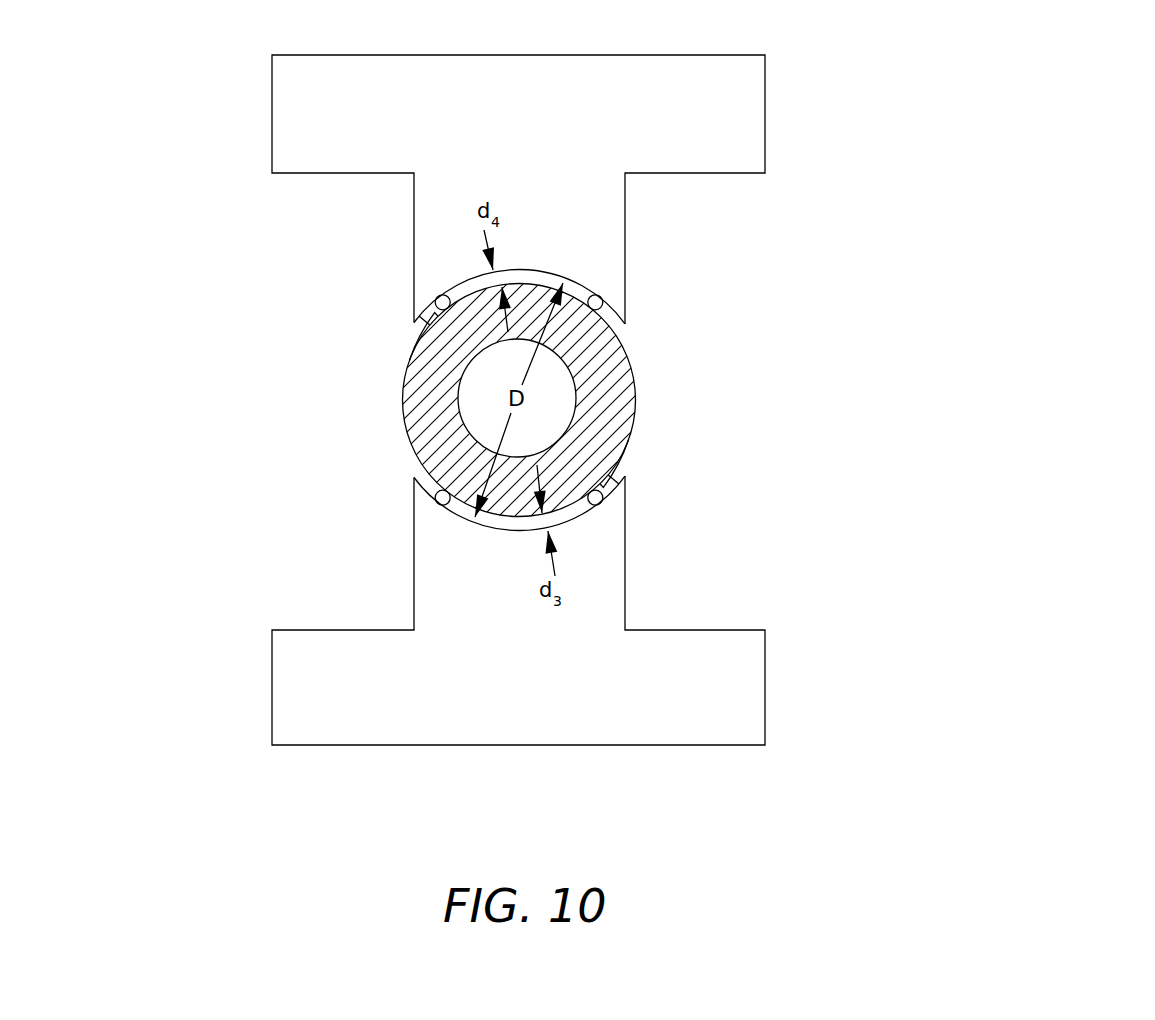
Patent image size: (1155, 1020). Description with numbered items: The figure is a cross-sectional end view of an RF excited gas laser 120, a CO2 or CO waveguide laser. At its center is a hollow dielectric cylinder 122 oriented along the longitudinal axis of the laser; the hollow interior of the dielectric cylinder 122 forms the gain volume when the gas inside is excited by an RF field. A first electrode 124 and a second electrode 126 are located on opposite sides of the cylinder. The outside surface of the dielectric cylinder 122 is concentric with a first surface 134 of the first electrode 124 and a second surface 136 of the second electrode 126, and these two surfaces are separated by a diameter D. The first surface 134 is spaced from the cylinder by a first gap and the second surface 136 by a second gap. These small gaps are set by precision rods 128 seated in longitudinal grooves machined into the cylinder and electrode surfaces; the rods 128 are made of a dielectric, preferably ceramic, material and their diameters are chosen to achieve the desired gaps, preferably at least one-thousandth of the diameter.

The RF excited gas laser 120 is at (970, 118).
The hollow dielectric cylinder 122 is at (414, 423).
The first electrode 124 is at (282, 714).
The second electrode 126 is at (282, 141).
The precision rods 128 is at (598, 298).
The first surface 134 is at (626, 441).
The second surface 136 is at (412, 357).